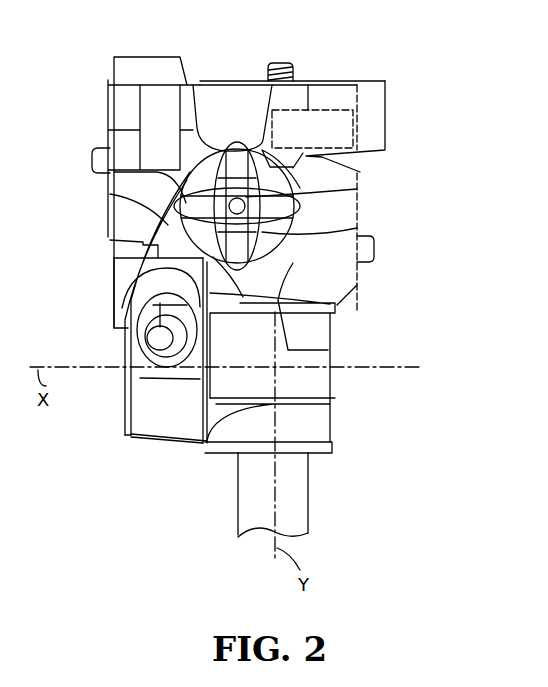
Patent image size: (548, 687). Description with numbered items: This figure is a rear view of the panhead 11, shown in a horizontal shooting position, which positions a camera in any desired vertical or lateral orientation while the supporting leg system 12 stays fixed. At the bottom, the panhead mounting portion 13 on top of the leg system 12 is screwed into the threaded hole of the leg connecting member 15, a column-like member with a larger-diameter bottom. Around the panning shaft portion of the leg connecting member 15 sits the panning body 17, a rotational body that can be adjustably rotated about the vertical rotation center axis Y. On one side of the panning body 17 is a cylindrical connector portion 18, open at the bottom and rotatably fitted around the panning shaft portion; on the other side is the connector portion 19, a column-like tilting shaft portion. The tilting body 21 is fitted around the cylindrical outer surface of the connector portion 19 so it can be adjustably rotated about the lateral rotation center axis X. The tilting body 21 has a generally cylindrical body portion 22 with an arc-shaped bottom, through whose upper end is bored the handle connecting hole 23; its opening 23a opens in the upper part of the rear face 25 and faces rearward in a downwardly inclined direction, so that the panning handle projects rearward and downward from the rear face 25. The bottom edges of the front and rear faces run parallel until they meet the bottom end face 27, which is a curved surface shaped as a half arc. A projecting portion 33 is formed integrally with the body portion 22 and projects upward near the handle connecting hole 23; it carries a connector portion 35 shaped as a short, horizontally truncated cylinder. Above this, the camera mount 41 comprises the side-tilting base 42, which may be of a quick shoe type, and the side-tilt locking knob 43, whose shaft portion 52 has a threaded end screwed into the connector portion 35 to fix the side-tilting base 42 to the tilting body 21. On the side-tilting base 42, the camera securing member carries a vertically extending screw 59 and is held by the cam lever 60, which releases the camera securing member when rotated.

The panhead 11 is at (404, 65).
The leg system 12 is at (308, 520).
The panhead mounting portion 13 is at (298, 482).
The leg connecting member 15 is at (318, 443).
The panning body 17 is at (355, 287).
The connector portion 18 is at (322, 391).
The connector portion 19 is at (127, 402).
The tilting body 21 is at (152, 456).
The body portion 22 is at (195, 433).
The handle connecting hole 23 is at (123, 310).
The opening 23a is at (140, 345).
The rear face 25 is at (140, 378).
The bottom end face 27 is at (170, 443).
The projecting portion 33 is at (110, 194).
The connector portion 35 is at (114, 239).
The camera mount 41 is at (403, 110).
The side-tilting base 42 is at (217, 80).
The side-tilt locking knob 43 is at (353, 230).
The shaft portion 52 is at (353, 193).
The screw 59 is at (278, 66).
The cam lever 60 is at (128, 85).